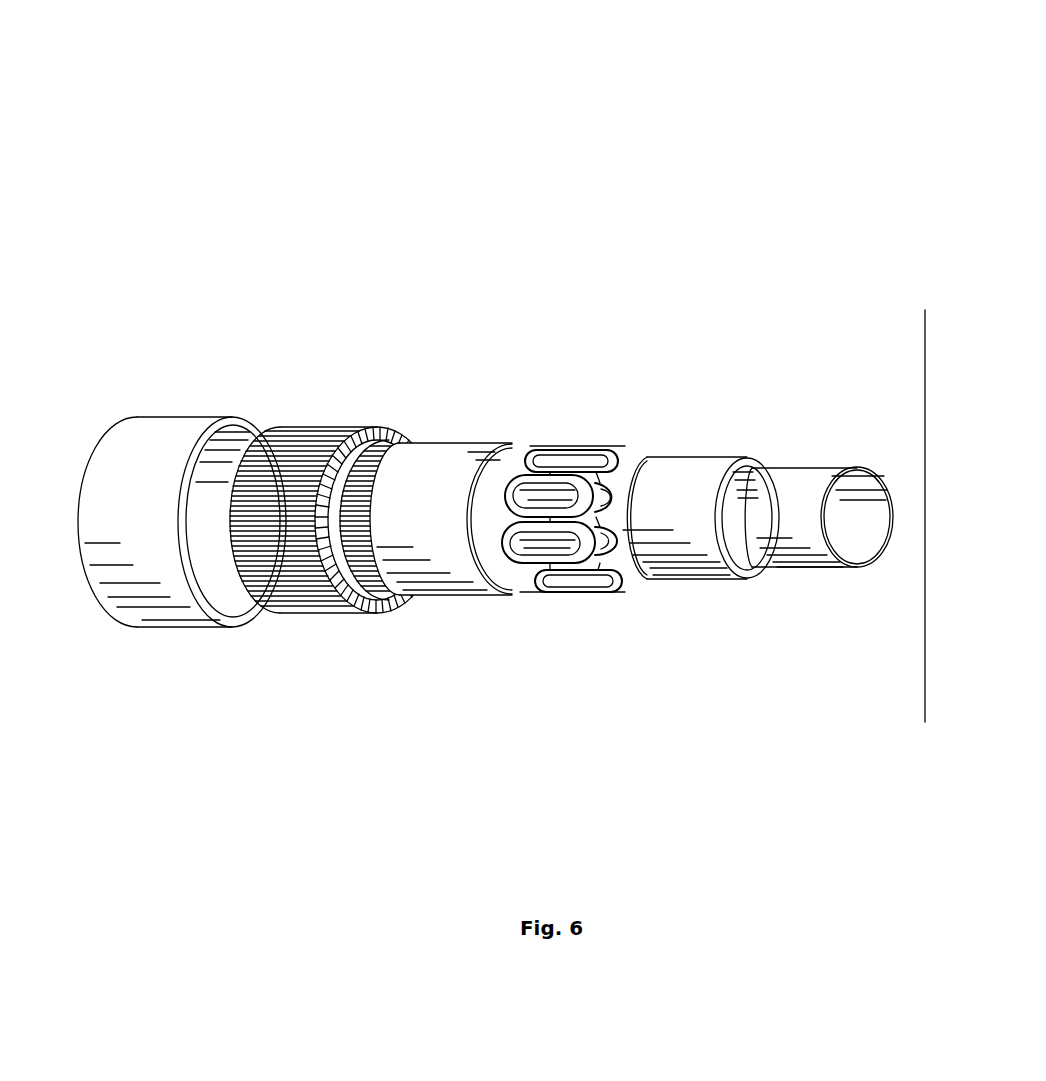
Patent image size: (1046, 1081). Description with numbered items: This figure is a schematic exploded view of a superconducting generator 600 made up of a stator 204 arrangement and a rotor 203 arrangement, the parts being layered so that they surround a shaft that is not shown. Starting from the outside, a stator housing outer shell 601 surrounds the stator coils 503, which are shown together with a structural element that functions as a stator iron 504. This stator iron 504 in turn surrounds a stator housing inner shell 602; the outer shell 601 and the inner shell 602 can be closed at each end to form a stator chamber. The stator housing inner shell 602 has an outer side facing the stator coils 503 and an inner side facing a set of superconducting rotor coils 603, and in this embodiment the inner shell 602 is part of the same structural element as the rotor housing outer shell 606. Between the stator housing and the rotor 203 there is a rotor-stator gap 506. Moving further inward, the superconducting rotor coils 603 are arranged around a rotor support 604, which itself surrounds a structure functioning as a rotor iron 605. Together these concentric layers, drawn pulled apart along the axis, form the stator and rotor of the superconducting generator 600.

The superconducting generator 600 is at (423, 150).
The stator 204 is at (318, 333).
The rotor 203 is at (731, 312).
The stator housing outer shell 601 is at (165, 442).
The stator iron 504 is at (334, 577).
The stator coils 503 is at (368, 598).
The stator housing inner shell 602 is at (417, 438).
The superconducting rotor coils 603 is at (583, 557).
The rotor housing outer shell 606 is at (530, 479).
The rotor-stator gap 506 is at (504, 566).
The rotor support 604 is at (685, 490).
The rotor iron 605 is at (803, 490).